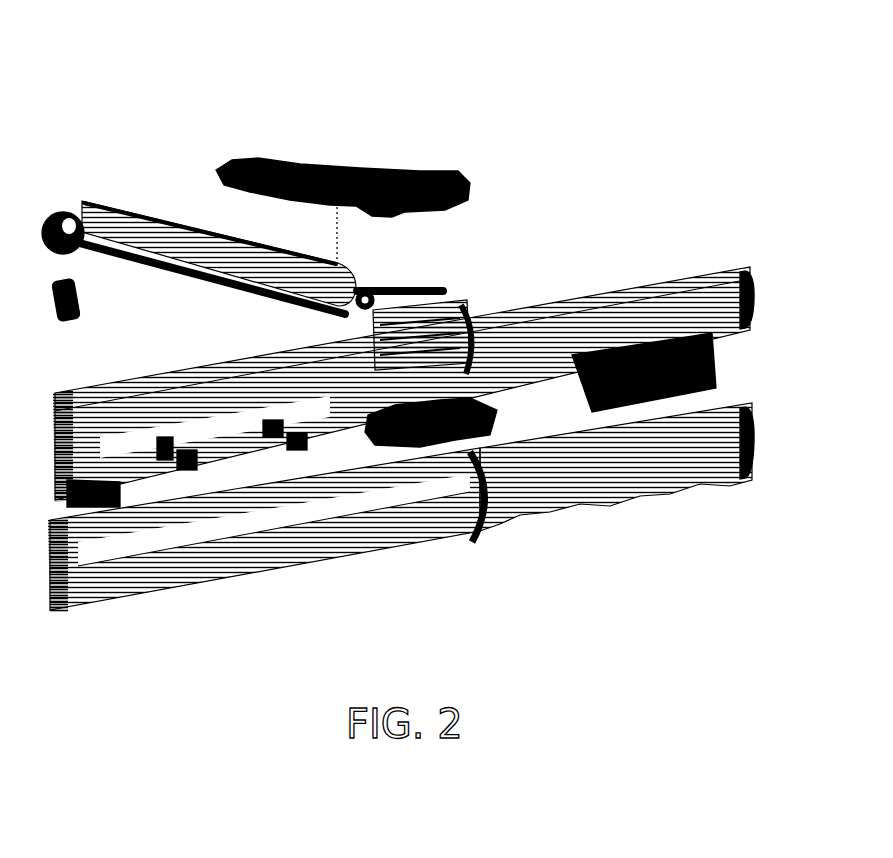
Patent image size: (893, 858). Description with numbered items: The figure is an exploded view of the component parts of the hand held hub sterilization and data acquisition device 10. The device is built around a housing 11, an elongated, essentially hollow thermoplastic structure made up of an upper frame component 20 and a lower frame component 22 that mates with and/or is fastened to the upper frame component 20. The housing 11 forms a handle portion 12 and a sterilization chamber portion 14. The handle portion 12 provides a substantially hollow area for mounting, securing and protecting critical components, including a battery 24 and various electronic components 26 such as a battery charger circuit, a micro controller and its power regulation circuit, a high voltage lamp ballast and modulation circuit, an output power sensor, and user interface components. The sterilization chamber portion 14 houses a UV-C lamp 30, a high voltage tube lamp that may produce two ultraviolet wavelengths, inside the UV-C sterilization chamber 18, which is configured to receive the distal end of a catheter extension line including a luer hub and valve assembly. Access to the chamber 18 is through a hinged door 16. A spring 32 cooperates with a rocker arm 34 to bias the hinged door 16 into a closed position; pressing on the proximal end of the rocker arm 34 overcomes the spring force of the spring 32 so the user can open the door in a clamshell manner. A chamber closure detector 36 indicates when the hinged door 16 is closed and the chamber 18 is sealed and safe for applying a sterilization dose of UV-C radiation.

The hand held hub sterilization and data acquisition device 10 is at (413, 340).
The housing 11 is at (435, 412).
The handle portion 12 is at (403, 376).
The sterilization chamber portion 14 is at (270, 564).
The hinged door 16 is at (138, 232).
The UV-C sterilization chamber 18 is at (199, 380).
The upper frame component 20 is at (535, 297).
The lower frame component 22 is at (623, 501).
The battery 24 is at (650, 348).
The electronic components 26 is at (452, 439).
The UV-C lamp 30 is at (224, 478).
The spring 32 is at (413, 289).
The rocker arm 34 is at (387, 180).
The chamber closure detector 36 is at (60, 293).